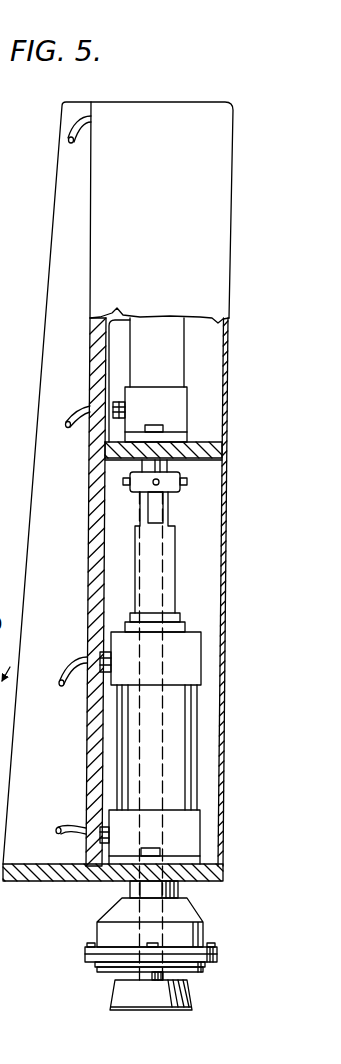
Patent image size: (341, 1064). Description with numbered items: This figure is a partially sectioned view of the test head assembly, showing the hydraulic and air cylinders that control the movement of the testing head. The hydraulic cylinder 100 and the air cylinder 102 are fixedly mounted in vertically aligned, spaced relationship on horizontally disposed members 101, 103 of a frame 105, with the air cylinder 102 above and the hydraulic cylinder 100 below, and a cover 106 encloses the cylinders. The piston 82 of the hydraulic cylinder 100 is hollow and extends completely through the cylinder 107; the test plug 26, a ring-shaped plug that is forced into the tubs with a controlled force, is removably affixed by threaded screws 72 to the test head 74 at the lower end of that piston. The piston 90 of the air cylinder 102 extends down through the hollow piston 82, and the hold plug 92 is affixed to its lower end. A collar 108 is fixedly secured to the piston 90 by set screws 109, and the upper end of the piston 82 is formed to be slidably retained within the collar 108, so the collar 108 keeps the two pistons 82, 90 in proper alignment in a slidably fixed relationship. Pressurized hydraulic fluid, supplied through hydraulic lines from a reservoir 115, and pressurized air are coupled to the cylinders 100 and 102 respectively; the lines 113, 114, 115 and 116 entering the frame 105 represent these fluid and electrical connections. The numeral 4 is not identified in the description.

The apparatus 4 is at (4, 209).
The test plug 26 is at (203, 966).
The threaded screws 72 is at (18, 239).
The test head 74 is at (182, 908).
The piston 82 is at (123, 888).
The piston 90 is at (152, 982).
The hold plug 92 is at (190, 1000).
The hydraulic cylinder 100 is at (115, 787).
The horizontally disposed member 101 is at (213, 864).
The air cylinder 102 is at (144, 329).
The horizontally disposed member 103 is at (208, 442).
The frame 105 is at (84, 752).
The cover 106 is at (172, 120).
The cylinder 107 is at (128, 725).
The collar 108 is at (130, 491).
The set screws 109 is at (132, 478).
The fluid conduit 113 is at (58, 671).
The fluid conduit 114 is at (77, 838).
The reservoir 115 is at (76, 130).
The electrical conduit 116 is at (84, 410).